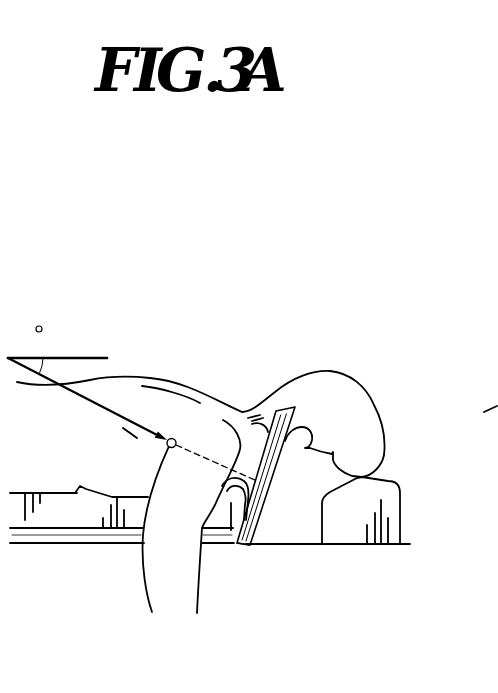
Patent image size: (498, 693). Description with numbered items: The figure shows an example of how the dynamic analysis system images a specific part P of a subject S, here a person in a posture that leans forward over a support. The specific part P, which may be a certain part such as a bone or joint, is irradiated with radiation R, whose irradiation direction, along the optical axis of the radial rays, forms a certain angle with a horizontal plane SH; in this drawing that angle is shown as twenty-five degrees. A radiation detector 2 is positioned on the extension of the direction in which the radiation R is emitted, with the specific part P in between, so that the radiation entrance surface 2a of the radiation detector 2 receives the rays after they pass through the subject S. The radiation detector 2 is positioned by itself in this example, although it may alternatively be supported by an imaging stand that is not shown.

The radiation detector 2 is at (276, 394).
The radiation entrance surface 2a is at (246, 500).
The subject S is at (330, 385).
The horizontal plane SH is at (88, 357).
The specific part P is at (182, 414).
The radiation R is at (83, 397).